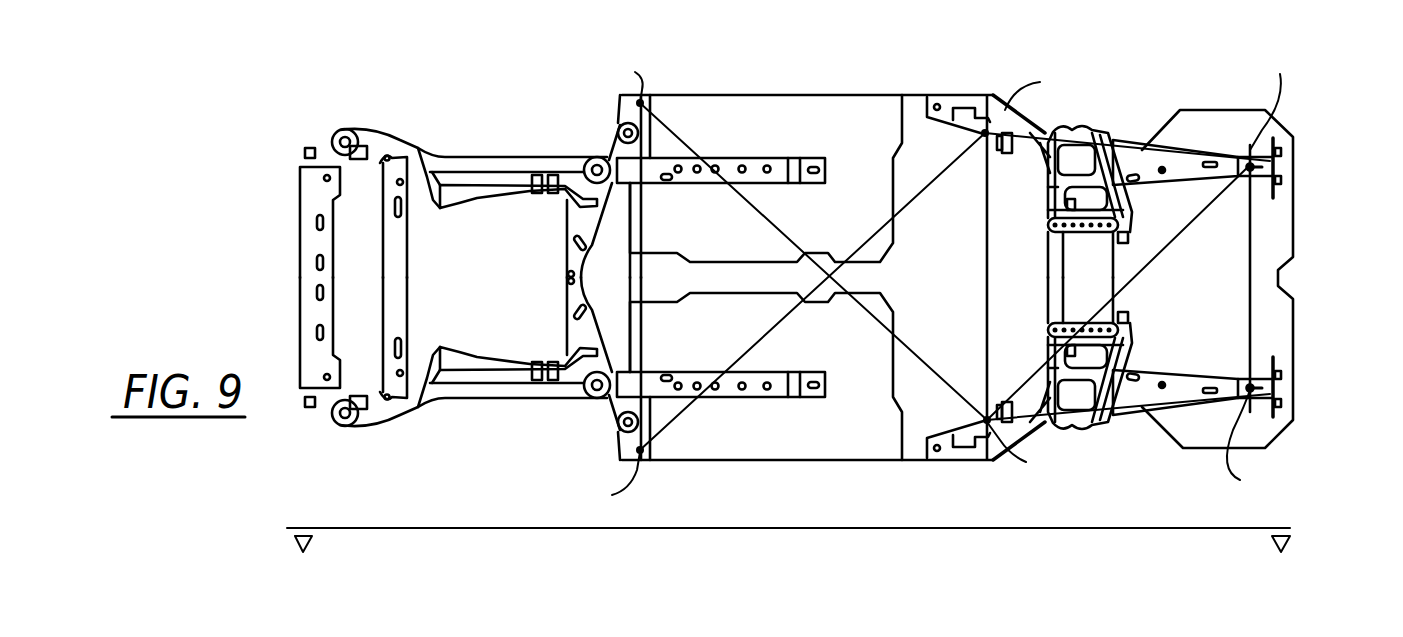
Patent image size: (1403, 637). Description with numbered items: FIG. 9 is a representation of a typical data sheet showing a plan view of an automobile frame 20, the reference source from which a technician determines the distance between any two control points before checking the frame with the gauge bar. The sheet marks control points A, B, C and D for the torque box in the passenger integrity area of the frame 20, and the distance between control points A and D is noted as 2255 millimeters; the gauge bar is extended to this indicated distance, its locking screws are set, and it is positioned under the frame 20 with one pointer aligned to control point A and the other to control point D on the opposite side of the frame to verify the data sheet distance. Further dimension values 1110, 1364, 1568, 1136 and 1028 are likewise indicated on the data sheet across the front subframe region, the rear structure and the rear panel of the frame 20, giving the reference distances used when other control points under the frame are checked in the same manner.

The frame 20 is at (935, 40).
The floor pan 1110 is at (985, 260).
The front subframe / cradle 1364 is at (643, 277).
The distance between control points A and D 2255 is at (890, 207).
The rear frame structure 1568 is at (1142, 283).
The rear side rail 1136 is at (1162, 148).
The rear panel 1028 is at (1252, 230).